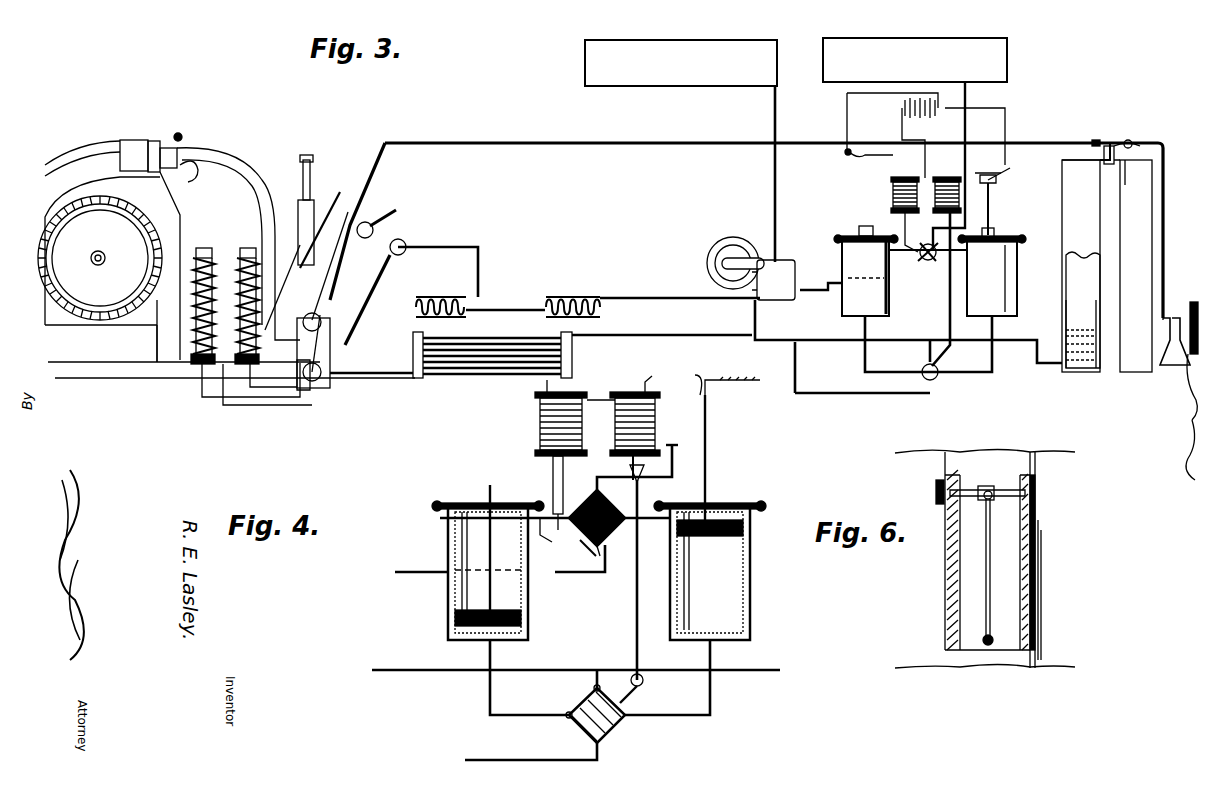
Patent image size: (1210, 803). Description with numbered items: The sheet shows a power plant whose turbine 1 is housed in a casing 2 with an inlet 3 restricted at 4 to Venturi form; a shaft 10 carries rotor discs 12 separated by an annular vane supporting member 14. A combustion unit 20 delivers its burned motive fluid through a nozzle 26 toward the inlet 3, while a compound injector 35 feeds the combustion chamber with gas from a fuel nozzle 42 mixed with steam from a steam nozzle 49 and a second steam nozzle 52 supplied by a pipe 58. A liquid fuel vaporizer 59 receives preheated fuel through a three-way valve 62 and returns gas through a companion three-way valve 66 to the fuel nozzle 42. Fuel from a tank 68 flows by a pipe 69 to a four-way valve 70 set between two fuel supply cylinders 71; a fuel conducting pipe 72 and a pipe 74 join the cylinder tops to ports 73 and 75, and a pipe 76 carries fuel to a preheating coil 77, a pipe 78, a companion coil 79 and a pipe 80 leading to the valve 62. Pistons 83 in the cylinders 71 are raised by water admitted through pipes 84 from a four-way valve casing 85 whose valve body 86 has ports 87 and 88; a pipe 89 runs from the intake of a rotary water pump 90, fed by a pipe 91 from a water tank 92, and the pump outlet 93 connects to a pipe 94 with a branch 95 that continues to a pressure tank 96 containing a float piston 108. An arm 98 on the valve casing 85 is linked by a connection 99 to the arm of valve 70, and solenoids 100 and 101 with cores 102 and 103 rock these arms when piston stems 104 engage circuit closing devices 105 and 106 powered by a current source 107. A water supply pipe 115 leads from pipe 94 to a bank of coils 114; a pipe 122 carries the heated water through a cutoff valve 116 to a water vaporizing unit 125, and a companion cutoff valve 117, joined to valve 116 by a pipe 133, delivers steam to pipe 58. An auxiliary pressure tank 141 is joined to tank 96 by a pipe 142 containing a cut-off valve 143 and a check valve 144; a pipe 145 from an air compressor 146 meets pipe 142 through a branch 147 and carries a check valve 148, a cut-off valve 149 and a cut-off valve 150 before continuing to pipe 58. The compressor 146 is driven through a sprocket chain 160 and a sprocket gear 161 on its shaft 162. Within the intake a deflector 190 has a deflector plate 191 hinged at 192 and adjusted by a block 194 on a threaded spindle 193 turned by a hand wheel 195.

In FIG. 3, the turbine 1 is at (112, 150).
In FIG. 6, the turbine casing 2 is at (1008, 580).
In FIG. 3, the inlet 3 is at (135, 146).
In FIG. 3, the restriction 4 is at (156, 145).
In FIG. 3, the shaft 10 is at (106, 257).
In FIG. 3, the rotor disc 12 is at (108, 215).
In FIG. 3, the annular vane supporting member 14 is at (226, 160).
In FIG. 3, the combustion unit 20 is at (245, 185).
In FIG. 3, the nozzle 26 is at (178, 152).
In FIG. 3, the compound injector 35 is at (302, 265).
In FIG. 3, the fuel nozzle 42 is at (310, 170).
In FIG. 3, the steam nozzle 49 is at (322, 214).
In FIG. 3, the second steam nozzle 52 is at (322, 296).
In FIG. 3, the steam pipe 58 is at (380, 164).
In FIG. 3, the liquid fuel vaporizer 59 is at (249, 252).
In FIG. 3, the three-way valve 62 is at (404, 240).
In FIG. 3, the three-way valve 66 is at (367, 222).
In FIG. 3, the fuel tank 68 is at (938, 46).
In FIG. 3, the fuel pipe 69 is at (968, 135).
In FIG. 4, the fuel pipe 69 is at (676, 448).
In FIG. 3, the four-way valve 70 is at (936, 258).
In FIG. 4, the four-way valve 70 is at (612, 540).
In FIG. 3, the fuel supply cylinders 71 is at (1010, 292).
In FIG. 4, the fuel supply cylinders 71 is at (516, 590).
In FIG. 3, the fuel conducting pipe 72 is at (849, 271).
In FIG. 4, the fuel conducting pipe 72 is at (550, 514).
In FIG. 4, the valve port 73 is at (628, 467).
In FIG. 4, the pipe 74 is at (646, 522).
In FIG. 4, the valve port 75 is at (598, 560).
In FIG. 3, the pipe 76 is at (660, 296).
In FIG. 4, the pipe 76 is at (562, 570).
In FIG. 3, the preheating coil 77 is at (582, 296).
In FIG. 3, the pipe 78 is at (506, 308).
In FIG. 3, the preheating coil 79 is at (440, 296).
In FIG. 3, the pipe 80 is at (462, 247).
In FIG. 4, the pistons 83 is at (455, 612).
In FIG. 3, the pipes 84 is at (865, 365).
In FIG. 4, the pipes 84 is at (524, 713).
In FIG. 4, the four-way valve casing 85 is at (628, 708).
In FIG. 4, the valve body 86 is at (582, 728).
In FIG. 4, the valve port 87 is at (590, 700).
In FIG. 4, the valve port 88 is at (620, 730).
In FIG. 3, the pipe 89 is at (866, 396).
In FIG. 4, the pipe 89 is at (498, 758).
In FIG. 3, the rotary water pump 90 is at (730, 250).
In FIG. 3, the pipe 91 is at (777, 206).
In FIG. 4, the pipe 91 is at (586, 560).
In FIG. 3, the water tank 92 is at (734, 72).
In FIG. 3, the pump outlet 93 is at (752, 292).
In FIG. 3, the pipe 94 is at (757, 316).
In FIG. 4, the pipe 94 is at (544, 668).
In FIG. 3, the branch 95 is at (924, 352).
In FIG. 4, the branch 95 is at (606, 668).
In FIG. 3, the pressure tank 96 is at (1062, 220).
In FIG. 3, the valve arm 98 is at (938, 368).
In FIG. 4, the valve arm 98 is at (644, 672).
In FIG. 3, the connection 99 is at (948, 310).
In FIG. 4, the connection 99 is at (638, 580).
In FIG. 3, the solenoid 100 is at (905, 177).
In FIG. 4, the solenoid 100 is at (537, 414).
In FIG. 3, the solenoid 101 is at (947, 177).
In FIG. 4, the solenoid 101 is at (662, 380).
In FIG. 3, the solenoid core 102 is at (906, 236).
In FIG. 4, the solenoid core 102 is at (538, 478).
In FIG. 3, the solenoid core 103 is at (988, 173).
In FIG. 4, the solenoid core 103 is at (658, 436).
In FIG. 3, the piston stems 104 is at (995, 204).
In FIG. 4, the piston stems 104 is at (708, 466).
In FIG. 3, the circuit closing device 105 is at (842, 156).
In FIG. 3, the circuit closing device 106 is at (1000, 172).
In FIG. 4, the circuit closing device 106 is at (708, 364).
In FIG. 3, the source of current supply 107 is at (922, 112).
In FIG. 3, the float piston 108 is at (1086, 370).
In FIG. 3, the bank of coils 114 is at (480, 352).
In FIG. 3, the water supply pipe 115 is at (672, 333).
In FIG. 3, the cutoff valve 116 is at (304, 392).
In FIG. 3, the cutoff valve 117 is at (318, 320).
In FIG. 3, the pipe 122 is at (352, 378).
In FIG. 3, the water vaporizing unit 125 is at (204, 252).
In FIG. 3, the pipe 133 is at (330, 350).
In FIG. 3, the auxiliary pressure tank 141 is at (1138, 255).
In FIG. 3, the pipe 142 is at (1104, 165).
In FIG. 3, the cut-off valve 143 is at (1108, 145).
In FIG. 3, the check valve 144 is at (1081, 171).
In FIG. 3, the pipe 145 is at (798, 141).
In FIG. 3, the air compressor 146 is at (1170, 368).
In FIG. 3, the branch 147 is at (1133, 266).
In FIG. 3, the check valve 148 is at (1142, 144).
In FIG. 3, the cut-off valve 149 is at (1130, 140).
In FIG. 3, the cut-off valve 150 is at (1094, 141).
In FIG. 3, the sprocket chain 160 is at (1190, 305).
In FIG. 3, the sprocket gear 161 is at (1190, 440).
In FIG. 3, the compressor shaft 162 is at (1190, 400).
In FIG. 6, the deflector 190 is at (994, 570).
In FIG. 6, the deflector plate 191 is at (992, 535).
In FIG. 6, the hinge mounting 192 is at (994, 640).
In FIG. 6, the threaded spindle 193 is at (1028, 486).
In FIG. 6, the block 194 is at (978, 500).
In FIG. 6, the hand wheel 195 is at (936, 490).